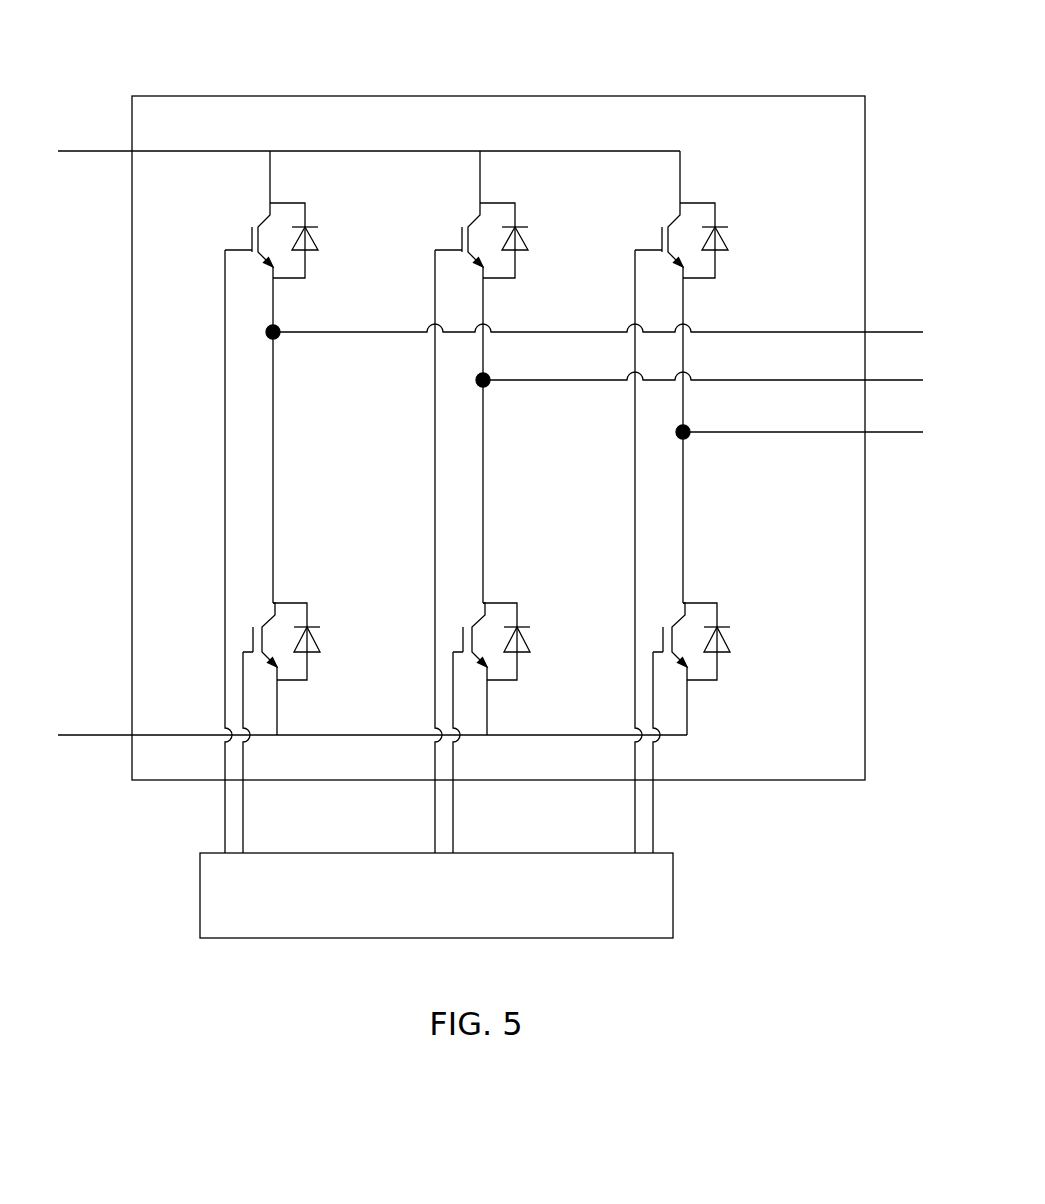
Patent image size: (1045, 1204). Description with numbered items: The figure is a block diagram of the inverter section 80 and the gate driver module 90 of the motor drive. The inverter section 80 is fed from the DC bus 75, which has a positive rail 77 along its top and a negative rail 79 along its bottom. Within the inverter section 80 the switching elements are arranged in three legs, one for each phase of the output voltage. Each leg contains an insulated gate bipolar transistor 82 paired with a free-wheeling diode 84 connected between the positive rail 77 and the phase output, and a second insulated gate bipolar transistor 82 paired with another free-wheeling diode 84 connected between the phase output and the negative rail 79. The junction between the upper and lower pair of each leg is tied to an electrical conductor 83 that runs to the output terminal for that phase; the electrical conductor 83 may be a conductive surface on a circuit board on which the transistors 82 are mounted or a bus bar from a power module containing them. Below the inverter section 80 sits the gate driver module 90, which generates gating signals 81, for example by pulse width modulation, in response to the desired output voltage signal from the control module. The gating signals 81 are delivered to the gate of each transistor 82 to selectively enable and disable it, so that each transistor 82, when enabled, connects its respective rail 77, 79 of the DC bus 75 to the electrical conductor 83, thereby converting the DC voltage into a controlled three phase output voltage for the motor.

The DC bus 75 is at (359, 443).
The positive rail 77 is at (68, 150).
The negative rail 79 is at (70, 737).
The inverter section 80 is at (404, 96).
The gating signals 81 is at (243, 828).
The insulated gate bipolar transistor 82 is at (246, 240).
The electrical conductor 83 is at (902, 415).
The free-wheeling diode 84 is at (320, 250).
The gate driver module 90 is at (674, 885).